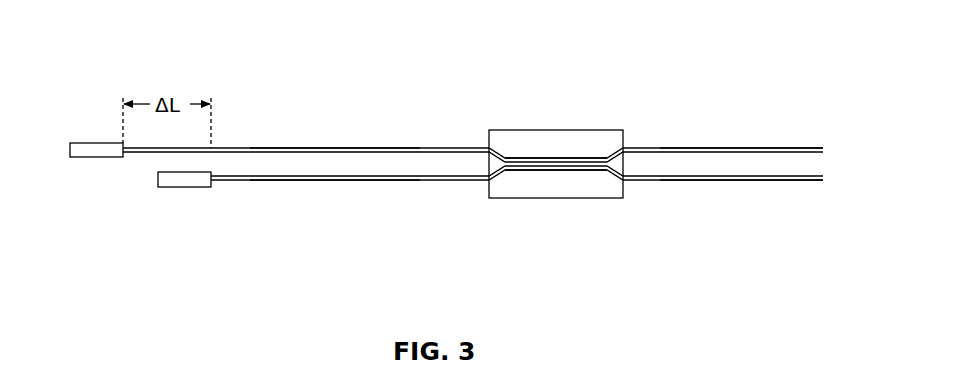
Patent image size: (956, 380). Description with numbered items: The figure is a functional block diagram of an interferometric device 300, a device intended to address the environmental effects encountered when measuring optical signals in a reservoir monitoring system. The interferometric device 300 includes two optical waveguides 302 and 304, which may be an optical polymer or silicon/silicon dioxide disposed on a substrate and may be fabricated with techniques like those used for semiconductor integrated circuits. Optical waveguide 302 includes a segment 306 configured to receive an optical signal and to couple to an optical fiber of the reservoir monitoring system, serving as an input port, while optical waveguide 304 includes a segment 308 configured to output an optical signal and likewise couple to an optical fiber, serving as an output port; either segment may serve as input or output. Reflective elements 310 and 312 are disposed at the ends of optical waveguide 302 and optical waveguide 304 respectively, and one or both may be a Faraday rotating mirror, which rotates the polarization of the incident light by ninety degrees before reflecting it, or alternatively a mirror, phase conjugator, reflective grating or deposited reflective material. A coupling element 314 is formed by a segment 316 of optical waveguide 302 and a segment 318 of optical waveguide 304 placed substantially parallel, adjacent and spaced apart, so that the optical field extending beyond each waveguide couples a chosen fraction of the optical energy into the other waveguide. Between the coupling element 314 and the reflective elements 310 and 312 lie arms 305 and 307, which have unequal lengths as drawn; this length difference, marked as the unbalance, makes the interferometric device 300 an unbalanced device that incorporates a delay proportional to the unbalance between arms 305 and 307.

The interferometric device 300 is at (198, 33).
The optical waveguide 302 is at (393, 140).
The optical waveguide 304 is at (399, 185).
The arm 305 is at (307, 147).
The arm 307 is at (308, 182).
The segment 306 is at (722, 147).
The segment 308 is at (722, 181).
The reflective element 310 is at (100, 143).
The reflective element 312 is at (183, 187).
The coupling element 314 is at (587, 200).
The segment 316 is at (557, 160).
The segment 318 is at (557, 168).